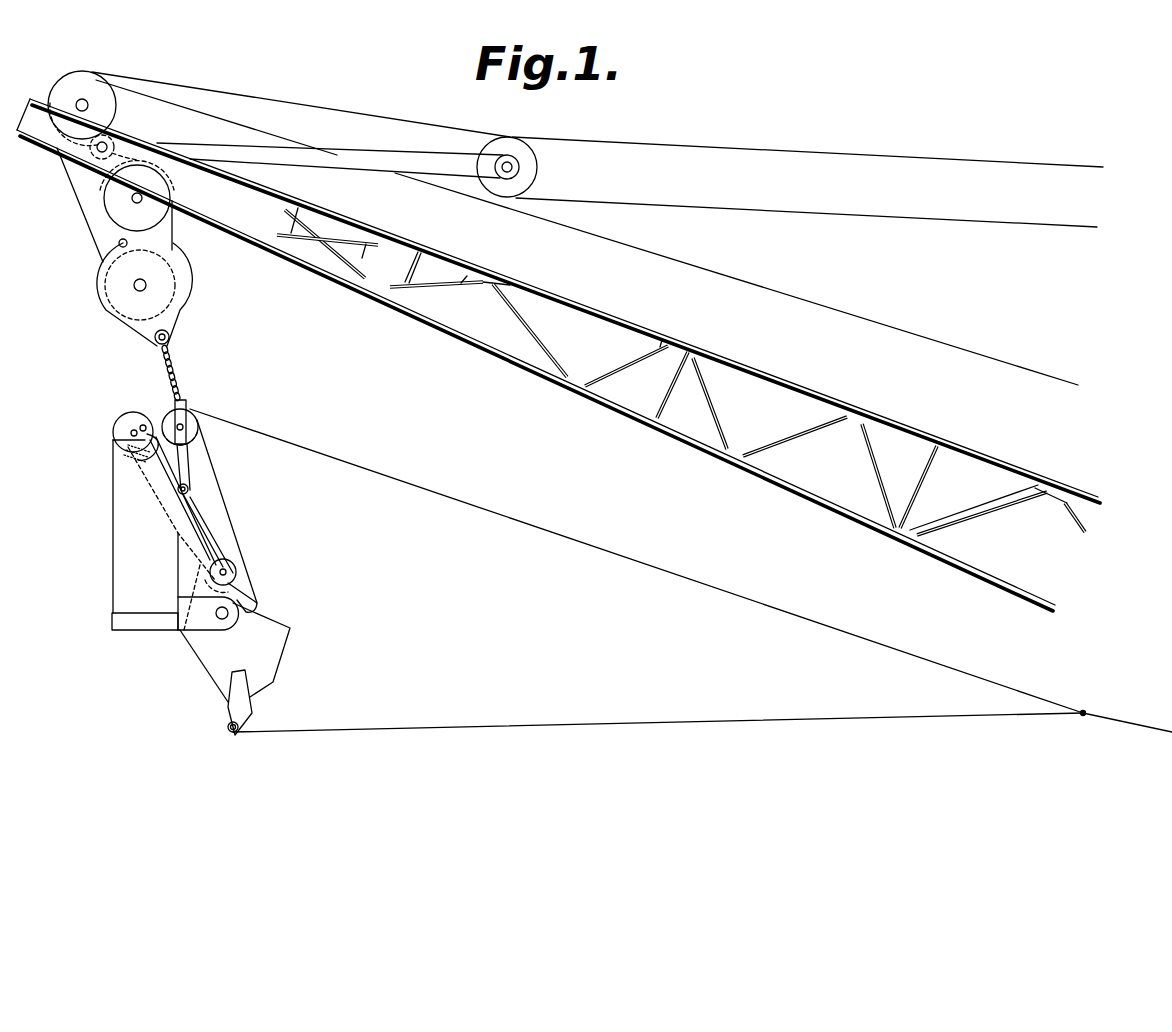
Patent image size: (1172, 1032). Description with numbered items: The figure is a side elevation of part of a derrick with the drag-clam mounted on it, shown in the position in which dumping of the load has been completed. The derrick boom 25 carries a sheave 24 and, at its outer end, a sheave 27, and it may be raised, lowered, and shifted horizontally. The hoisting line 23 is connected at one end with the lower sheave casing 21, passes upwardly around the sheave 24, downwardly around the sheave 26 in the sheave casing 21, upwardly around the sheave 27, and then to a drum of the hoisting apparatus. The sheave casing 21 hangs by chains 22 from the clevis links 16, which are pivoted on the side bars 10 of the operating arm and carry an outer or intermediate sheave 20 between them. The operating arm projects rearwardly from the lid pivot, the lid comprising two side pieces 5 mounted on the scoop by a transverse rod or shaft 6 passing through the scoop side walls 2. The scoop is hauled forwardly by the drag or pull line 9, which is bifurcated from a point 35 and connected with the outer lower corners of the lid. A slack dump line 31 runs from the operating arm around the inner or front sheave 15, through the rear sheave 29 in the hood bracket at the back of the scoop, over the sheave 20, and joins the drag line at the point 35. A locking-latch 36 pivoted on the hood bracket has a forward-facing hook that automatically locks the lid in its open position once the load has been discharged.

The side walls 2 is at (163, 535).
The side pieces 5 is at (235, 669).
The rod or shaft 6 is at (232, 616).
The drag or pull line 9 is at (793, 719).
The side bars 10 is at (163, 478).
The inner or front sheave 15 is at (237, 572).
The links 16 is at (187, 470).
The outer or intermediate sheave 20 is at (200, 413).
The lower sheave casing 21 is at (173, 322).
The chains 22 is at (178, 372).
The hoisting line 23 is at (77, 202).
The sheave 24 is at (137, 196).
The boom 25 is at (558, 355).
The sheave 26 is at (192, 278).
The sheave 27 is at (76, 90).
The rear sheave 29 is at (125, 422).
The dump line 31 is at (588, 546).
The connection point 35 is at (1083, 712).
The locking-latch 36 is at (123, 448).